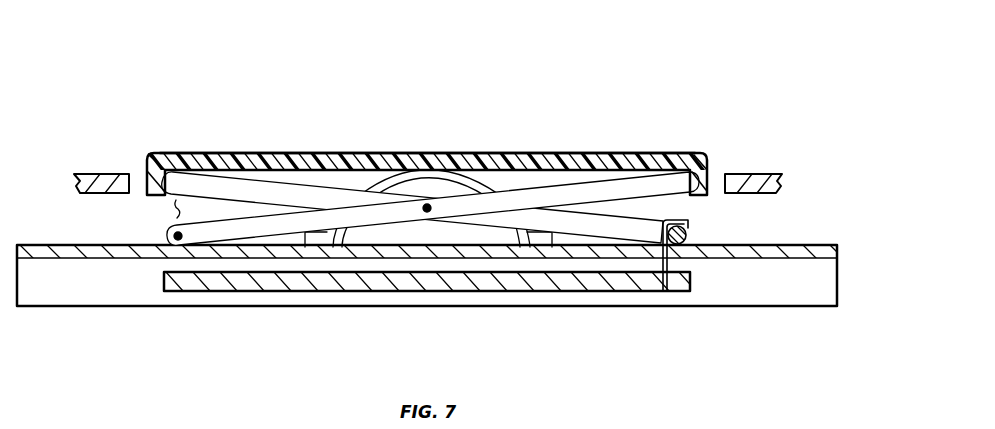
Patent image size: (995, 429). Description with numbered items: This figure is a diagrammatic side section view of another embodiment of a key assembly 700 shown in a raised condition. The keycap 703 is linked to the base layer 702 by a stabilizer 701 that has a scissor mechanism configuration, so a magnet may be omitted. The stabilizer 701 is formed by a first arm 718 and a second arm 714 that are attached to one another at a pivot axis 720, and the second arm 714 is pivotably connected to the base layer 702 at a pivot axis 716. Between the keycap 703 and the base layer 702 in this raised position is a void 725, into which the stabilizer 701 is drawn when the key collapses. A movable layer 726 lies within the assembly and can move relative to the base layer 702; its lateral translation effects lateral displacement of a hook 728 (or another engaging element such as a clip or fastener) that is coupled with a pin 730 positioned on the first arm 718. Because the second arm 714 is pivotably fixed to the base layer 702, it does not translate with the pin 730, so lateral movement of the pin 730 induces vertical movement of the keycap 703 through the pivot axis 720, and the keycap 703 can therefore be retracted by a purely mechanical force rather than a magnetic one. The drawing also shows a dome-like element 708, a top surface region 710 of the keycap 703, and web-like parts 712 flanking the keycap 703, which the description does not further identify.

The key assembly 700 is at (692, 106).
The stabilizer 701 is at (284, 190).
The base layer 702 is at (839, 252).
The keycap 703 is at (607, 162).
The dome spring 708 is at (449, 178).
The keycap top surface 710 is at (542, 153).
The housing web 712 is at (96, 174).
The second arm 714 is at (238, 228).
The pivot axis 716 is at (178, 240).
The first arm 718 is at (210, 187).
The pivot axis 720 is at (427, 212).
The void 725 is at (177, 209).
The movable layer 726 is at (580, 291).
The hook 728 is at (668, 262).
The pin 730 is at (690, 232).